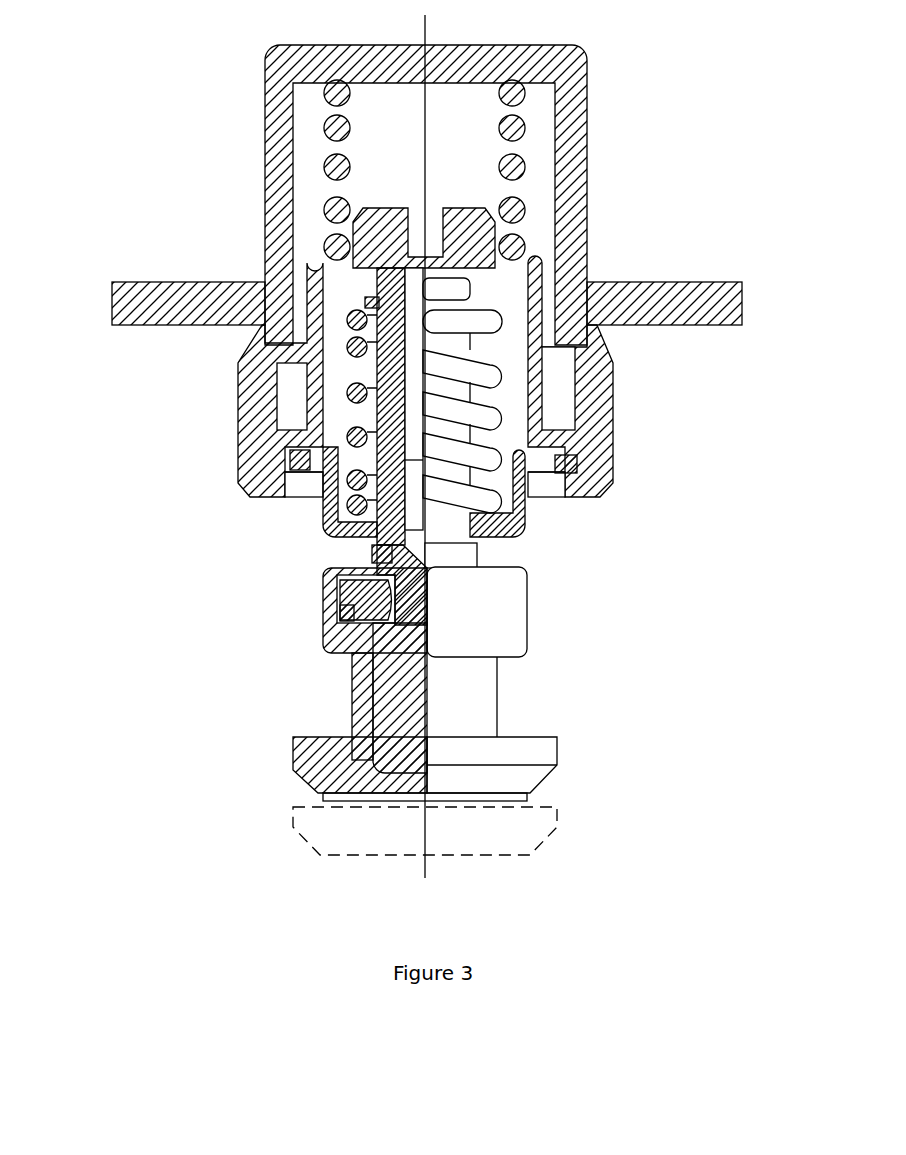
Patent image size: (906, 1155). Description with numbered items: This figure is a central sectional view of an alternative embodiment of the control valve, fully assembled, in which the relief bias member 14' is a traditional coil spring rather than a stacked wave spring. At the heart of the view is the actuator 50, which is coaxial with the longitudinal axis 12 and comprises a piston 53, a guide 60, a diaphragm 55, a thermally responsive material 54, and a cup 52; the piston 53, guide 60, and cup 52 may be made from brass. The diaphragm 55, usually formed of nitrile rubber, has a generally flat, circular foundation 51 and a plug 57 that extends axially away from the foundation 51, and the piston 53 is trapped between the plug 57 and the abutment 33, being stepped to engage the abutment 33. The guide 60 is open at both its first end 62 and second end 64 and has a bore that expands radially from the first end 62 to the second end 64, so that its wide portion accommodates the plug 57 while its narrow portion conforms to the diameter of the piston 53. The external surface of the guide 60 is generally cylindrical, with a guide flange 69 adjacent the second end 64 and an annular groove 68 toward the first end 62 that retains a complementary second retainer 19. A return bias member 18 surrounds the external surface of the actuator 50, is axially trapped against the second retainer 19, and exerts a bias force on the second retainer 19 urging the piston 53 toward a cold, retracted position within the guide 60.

The longitudinal axis 12 is at (430, 30).
The relief bias member 14' is at (494, 170).
The abutment 33 is at (367, 302).
The second retainer 19 is at (407, 268).
The first end 62 is at (470, 282).
The annular groove 68 is at (377, 308).
The piston 53 is at (412, 380).
The return bias member 18 is at (502, 420).
The plug 57 is at (375, 548).
The guide 60 is at (387, 550).
The guide flange 69 is at (397, 590).
The diaphragm 55 is at (348, 603).
The second end 64 is at (345, 612).
The foundation 51 is at (340, 625).
The actuator 50 is at (352, 685).
The cup 52 is at (373, 708).
The thermally responsive material 54 is at (330, 755).